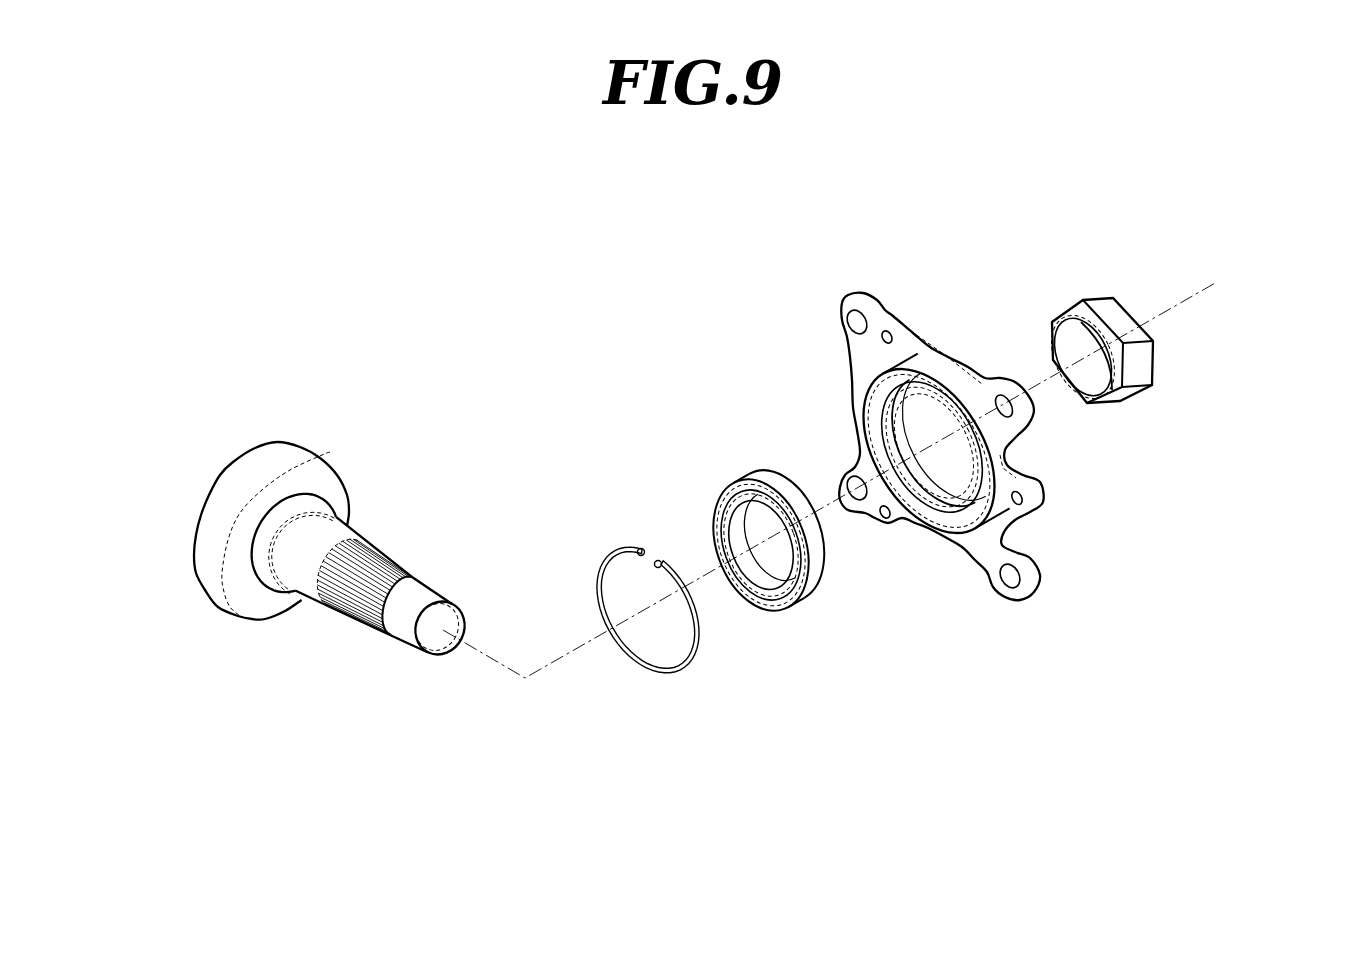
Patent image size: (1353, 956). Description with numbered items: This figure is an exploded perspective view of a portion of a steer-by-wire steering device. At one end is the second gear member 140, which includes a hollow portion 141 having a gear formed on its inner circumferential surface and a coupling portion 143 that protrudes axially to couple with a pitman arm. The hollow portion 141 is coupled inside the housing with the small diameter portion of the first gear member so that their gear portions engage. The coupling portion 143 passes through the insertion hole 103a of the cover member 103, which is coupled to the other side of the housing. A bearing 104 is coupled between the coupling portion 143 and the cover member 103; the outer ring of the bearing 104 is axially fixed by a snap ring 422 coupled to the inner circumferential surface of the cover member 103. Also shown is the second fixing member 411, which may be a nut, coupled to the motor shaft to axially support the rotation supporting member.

The second gear member 140 is at (259, 431).
The hollow portion 141 is at (247, 470).
The coupling portion 143 is at (390, 568).
The snap ring 422 is at (614, 540).
The bearing 104 is at (736, 470).
The cover member 103 is at (930, 366).
The insertion hole 103a is at (950, 472).
The second fixing member 411 is at (1087, 300).